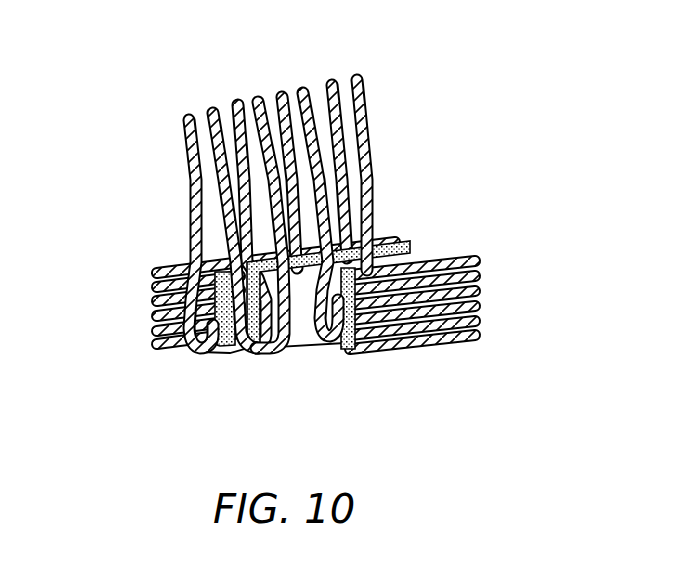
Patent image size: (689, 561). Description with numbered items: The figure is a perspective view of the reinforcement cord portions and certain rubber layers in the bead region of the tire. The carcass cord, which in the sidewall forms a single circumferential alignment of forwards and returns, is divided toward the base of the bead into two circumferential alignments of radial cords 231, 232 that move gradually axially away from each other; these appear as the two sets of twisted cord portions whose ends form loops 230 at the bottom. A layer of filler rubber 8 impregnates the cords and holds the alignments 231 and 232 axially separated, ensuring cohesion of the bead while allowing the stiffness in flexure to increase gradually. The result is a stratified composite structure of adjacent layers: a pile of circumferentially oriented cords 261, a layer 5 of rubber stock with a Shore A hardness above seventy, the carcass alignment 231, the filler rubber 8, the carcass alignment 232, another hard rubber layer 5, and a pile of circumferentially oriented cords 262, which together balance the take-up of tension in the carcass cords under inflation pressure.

The circumferential alignment of carcass cords 231 is at (205, 107).
The circumferential alignment of carcass cords 232 is at (184, 152).
The pile of circumferentially oriented cords 262 is at (151, 289).
The pile of circumferentially oriented cords 261 is at (427, 352).
The binding loops 230 is at (197, 357).
The layer of rubber stock 5 is at (227, 359).
The layer of filler rubber 8 is at (300, 337).